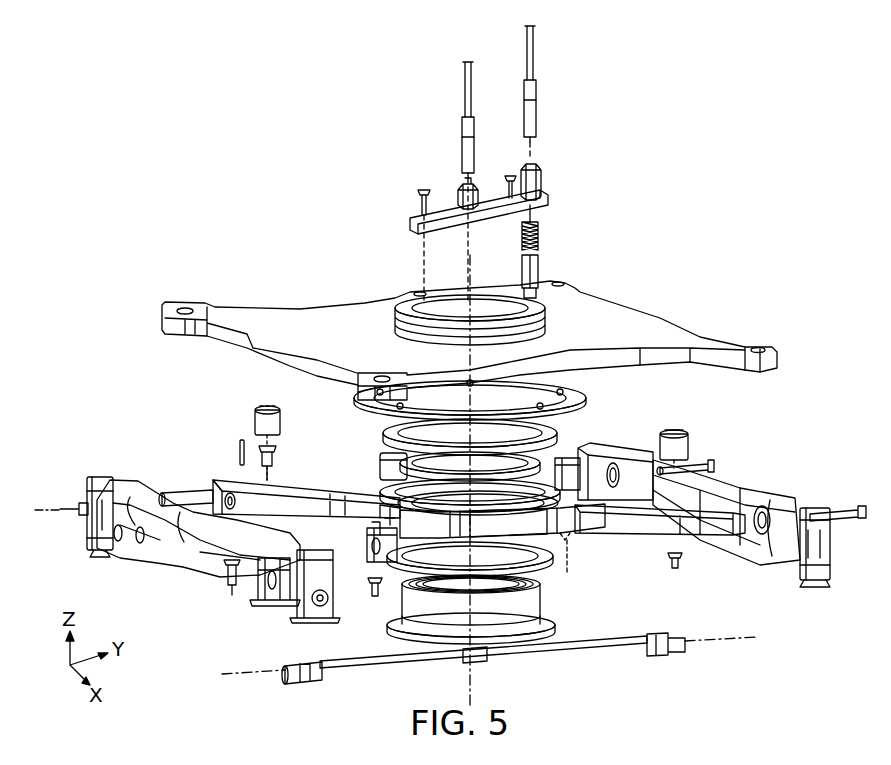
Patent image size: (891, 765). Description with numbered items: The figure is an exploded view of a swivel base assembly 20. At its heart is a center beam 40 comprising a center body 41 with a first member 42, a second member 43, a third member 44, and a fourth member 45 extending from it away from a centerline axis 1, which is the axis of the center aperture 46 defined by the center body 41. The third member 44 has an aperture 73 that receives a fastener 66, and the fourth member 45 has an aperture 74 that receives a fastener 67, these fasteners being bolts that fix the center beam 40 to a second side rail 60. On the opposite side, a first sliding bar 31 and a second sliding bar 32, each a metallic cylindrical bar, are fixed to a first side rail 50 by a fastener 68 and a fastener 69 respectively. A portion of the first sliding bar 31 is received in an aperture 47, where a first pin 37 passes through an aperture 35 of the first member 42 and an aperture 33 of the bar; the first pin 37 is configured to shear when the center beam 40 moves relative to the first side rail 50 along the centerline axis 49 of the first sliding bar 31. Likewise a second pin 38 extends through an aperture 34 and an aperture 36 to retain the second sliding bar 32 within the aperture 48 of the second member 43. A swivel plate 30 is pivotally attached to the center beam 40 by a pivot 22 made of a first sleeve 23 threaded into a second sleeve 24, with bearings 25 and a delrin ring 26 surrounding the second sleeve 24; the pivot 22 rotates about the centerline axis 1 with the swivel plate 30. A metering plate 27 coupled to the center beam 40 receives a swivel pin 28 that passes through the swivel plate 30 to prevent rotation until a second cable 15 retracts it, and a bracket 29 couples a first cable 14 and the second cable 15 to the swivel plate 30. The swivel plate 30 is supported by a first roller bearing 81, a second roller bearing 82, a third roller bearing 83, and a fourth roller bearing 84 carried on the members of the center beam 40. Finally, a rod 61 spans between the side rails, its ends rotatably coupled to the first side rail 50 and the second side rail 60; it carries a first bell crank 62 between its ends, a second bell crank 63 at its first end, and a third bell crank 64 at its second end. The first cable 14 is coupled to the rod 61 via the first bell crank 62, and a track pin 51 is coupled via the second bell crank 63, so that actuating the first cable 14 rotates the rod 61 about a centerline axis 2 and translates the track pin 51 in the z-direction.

The centerline axis 1 is at (470, 295).
The centerline axis 2 is at (240, 678).
The first cable 14 is at (466, 100).
The second cable 15 is at (532, 65).
The swivel base assembly 20 is at (215, 220).
The pivot 22 is at (398, 298).
The first sleeve 23 is at (395, 318).
The second sleeve 24 is at (420, 633).
The bearings 25 is at (385, 434).
The ring 26 is at (555, 480).
The metering plate 27 is at (360, 398).
The swivel pin 28 is at (552, 258).
The bracket 29 is at (553, 187).
The swivel plate 30 is at (602, 351).
The first sliding bar 31 is at (335, 590).
The second sliding bar 32 is at (215, 484).
The aperture 33 is at (372, 524).
The aperture 34 is at (195, 490).
The aperture 35 is at (380, 508).
The aperture 36 is at (240, 478).
The first pin 37 is at (380, 478).
The second pin 38 is at (241, 438).
The center beam 40 is at (580, 532).
The center body 41 is at (516, 532).
The first member 42 is at (374, 598).
The second member 43 is at (320, 513).
The third member 44 is at (595, 452).
The fourth member 45 is at (652, 533).
The center aperture 46 is at (570, 545).
The aperture 47 is at (374, 562).
The aperture 48 is at (237, 502).
The centerline axis 49 is at (200, 560).
The first side rail 50 is at (165, 552).
The track pin 51 is at (230, 590).
The second side rail 60 is at (760, 495).
The rod 61 is at (612, 640).
The first bell crank 62 is at (482, 660).
The second bell crank 63 is at (318, 684).
The third bell crank 64 is at (658, 656).
The fastener 66 is at (710, 463).
The fastener 67 is at (858, 510).
The fastener 68 is at (268, 602).
The fastener 69 is at (75, 503).
The aperture 73 is at (580, 455).
The aperture 74 is at (676, 568).
The first roller bearing 81 is at (402, 458).
The second roller bearing 82 is at (283, 400).
The third roller bearing 83 is at (530, 400).
The fourth roller bearing 84 is at (675, 430).